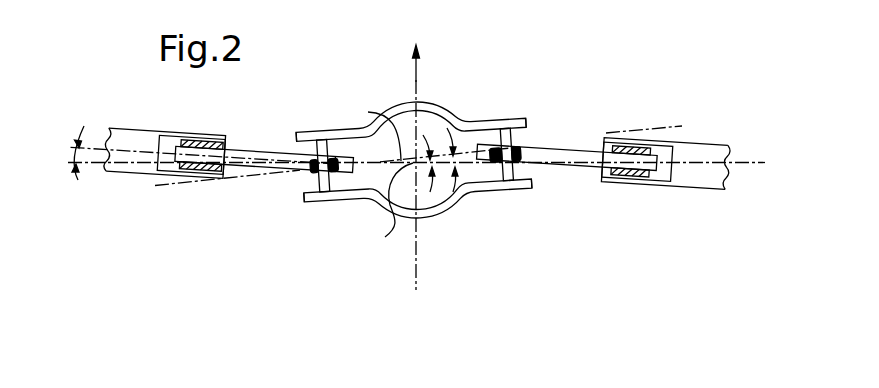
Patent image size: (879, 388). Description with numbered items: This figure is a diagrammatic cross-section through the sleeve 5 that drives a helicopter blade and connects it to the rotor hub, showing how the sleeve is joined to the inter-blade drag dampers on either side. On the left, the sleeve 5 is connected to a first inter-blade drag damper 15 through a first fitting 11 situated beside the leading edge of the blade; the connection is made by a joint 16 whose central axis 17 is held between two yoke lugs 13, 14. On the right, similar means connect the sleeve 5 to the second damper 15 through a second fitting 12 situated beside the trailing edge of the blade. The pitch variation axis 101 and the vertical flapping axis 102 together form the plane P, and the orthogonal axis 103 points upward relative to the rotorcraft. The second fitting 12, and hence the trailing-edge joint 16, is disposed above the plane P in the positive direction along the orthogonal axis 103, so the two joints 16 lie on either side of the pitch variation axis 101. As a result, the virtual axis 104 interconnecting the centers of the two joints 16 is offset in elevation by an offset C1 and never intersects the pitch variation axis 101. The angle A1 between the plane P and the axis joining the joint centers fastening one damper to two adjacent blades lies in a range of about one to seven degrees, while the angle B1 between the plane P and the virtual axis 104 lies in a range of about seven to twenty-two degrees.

The sleeve 5 is at (411, 96).
The first fitting 11 is at (353, 226).
The second fitting 12 is at (516, 116).
The yoke lug 13 is at (298, 136).
The yoke lug 14 is at (335, 202).
The inter-blade drag damper 15 is at (134, 174).
The joint 16 is at (300, 186).
The central axis 17 is at (306, 132).
The pitch variation axis 101 is at (384, 188).
The vertical flapping axis 102 is at (481, 164).
The orthogonal axis 103 is at (412, 64).
The virtual axis 104 is at (378, 110).
The angle A1 is at (84, 127).
The angle B1 is at (463, 116).
The offset C1 is at (424, 184).
The plane P is at (742, 166).